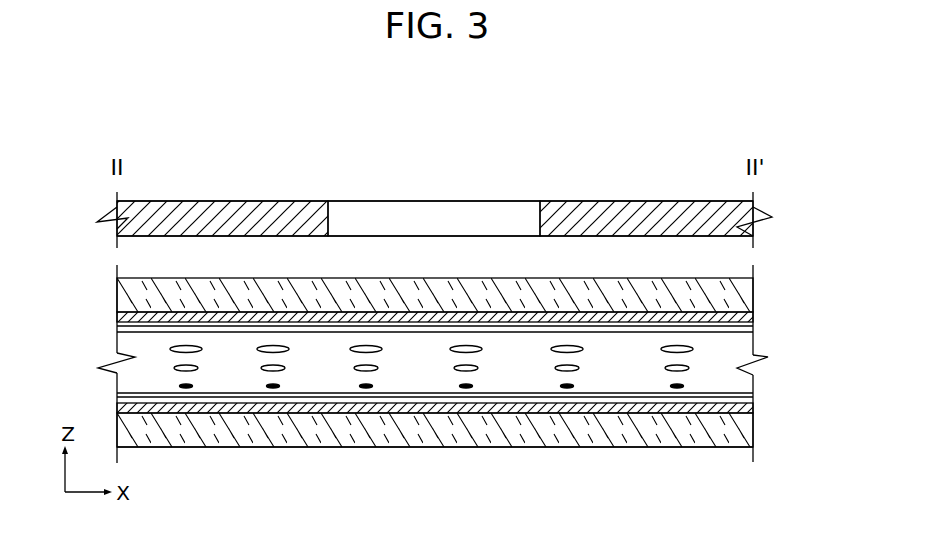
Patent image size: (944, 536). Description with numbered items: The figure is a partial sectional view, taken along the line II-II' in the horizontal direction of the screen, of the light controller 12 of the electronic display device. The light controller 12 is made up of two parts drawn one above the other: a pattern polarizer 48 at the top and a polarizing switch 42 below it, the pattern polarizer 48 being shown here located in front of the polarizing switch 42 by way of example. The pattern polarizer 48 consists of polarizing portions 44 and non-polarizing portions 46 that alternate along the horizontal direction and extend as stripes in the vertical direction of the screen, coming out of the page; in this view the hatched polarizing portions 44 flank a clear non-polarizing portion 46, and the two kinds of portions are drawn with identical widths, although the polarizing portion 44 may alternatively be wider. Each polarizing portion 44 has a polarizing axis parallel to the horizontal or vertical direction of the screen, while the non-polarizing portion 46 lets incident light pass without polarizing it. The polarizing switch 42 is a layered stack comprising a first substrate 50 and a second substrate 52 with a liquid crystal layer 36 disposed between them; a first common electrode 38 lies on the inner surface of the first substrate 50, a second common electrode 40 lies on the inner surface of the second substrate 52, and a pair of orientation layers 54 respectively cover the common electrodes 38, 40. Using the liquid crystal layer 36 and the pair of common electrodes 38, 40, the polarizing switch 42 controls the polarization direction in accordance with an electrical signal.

The light controller 12 is at (450, 117).
The liquid crystal layer 36 is at (745, 371).
The first common electrode 38 is at (740, 409).
The second common electrode 40 is at (740, 320).
The polarizing switch 42 is at (737, 462).
The polarizing portion 44 is at (240, 206).
The non-polarizing portion 46 is at (447, 206).
The pattern polarizer 48 is at (596, 198).
The first substrate 50 is at (745, 435).
The second substrate 52 is at (745, 297).
The orientation layer 54 is at (745, 329).